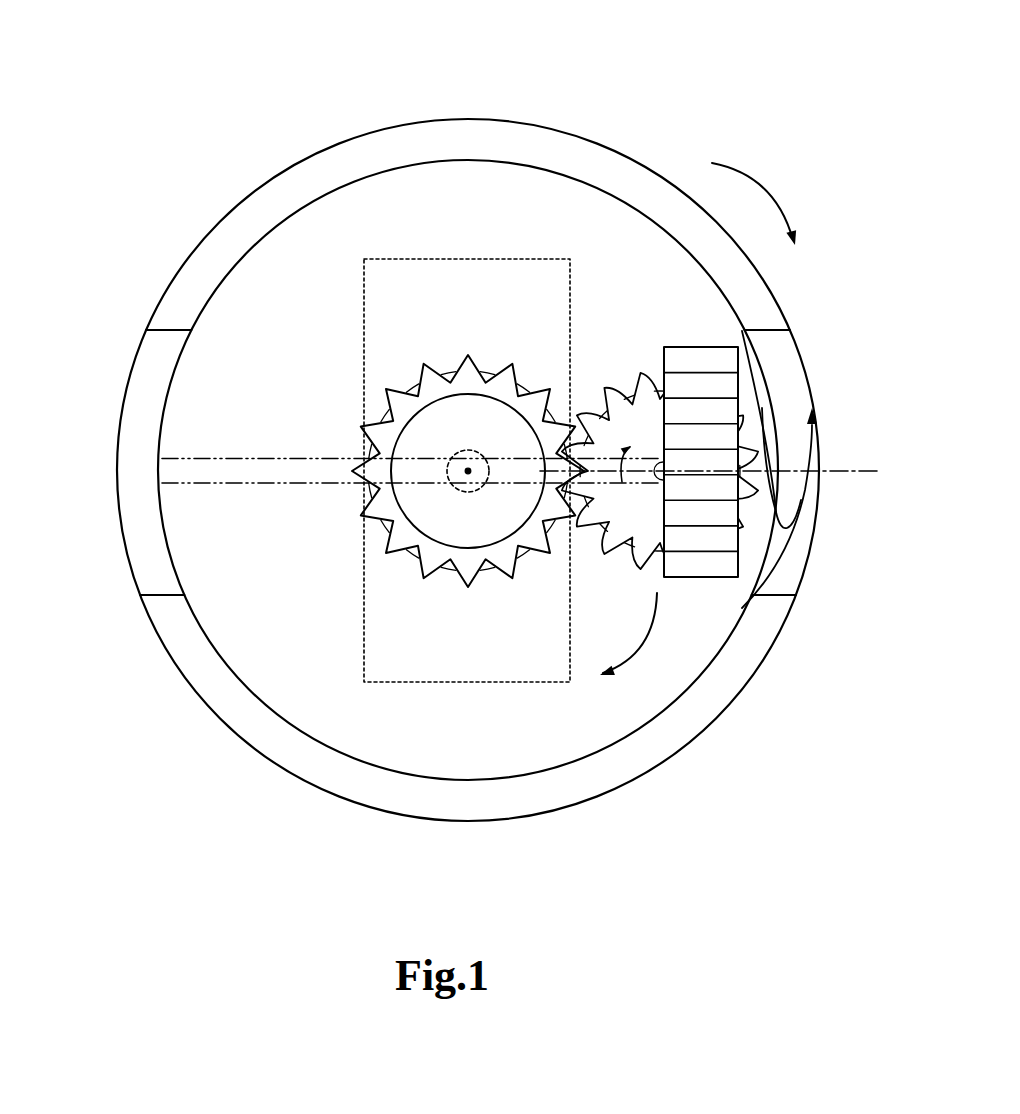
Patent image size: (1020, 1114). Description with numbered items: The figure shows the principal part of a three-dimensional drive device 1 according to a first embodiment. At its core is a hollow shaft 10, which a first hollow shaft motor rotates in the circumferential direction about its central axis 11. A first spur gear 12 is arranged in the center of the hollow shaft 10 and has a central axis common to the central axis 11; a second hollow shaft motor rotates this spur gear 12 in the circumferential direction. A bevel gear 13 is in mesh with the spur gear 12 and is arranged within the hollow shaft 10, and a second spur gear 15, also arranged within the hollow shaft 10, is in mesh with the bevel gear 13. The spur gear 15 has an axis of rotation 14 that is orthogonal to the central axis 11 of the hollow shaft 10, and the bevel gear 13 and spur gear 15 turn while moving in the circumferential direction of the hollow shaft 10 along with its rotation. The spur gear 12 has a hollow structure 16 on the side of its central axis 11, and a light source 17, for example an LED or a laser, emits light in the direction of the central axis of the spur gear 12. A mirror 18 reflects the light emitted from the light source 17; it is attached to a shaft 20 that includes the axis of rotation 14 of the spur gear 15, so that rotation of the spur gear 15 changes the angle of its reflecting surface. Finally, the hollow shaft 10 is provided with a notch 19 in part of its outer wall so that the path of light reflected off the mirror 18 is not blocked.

The three-dimensional drive device 1 is at (768, 82).
The hollow shaft 10 is at (137, 483).
The central axis 11 is at (467, 471).
The first spur gear 12 is at (467, 372).
The bevel gear 13 is at (618, 557).
The axis of rotation 14 is at (850, 478).
The second spur gear 15 is at (705, 567).
The hollow structure 16 is at (422, 507).
The light source 17 is at (474, 485).
The mirror 18 is at (387, 663).
The notch 19 is at (490, 130).
The shaft 20 is at (208, 481).